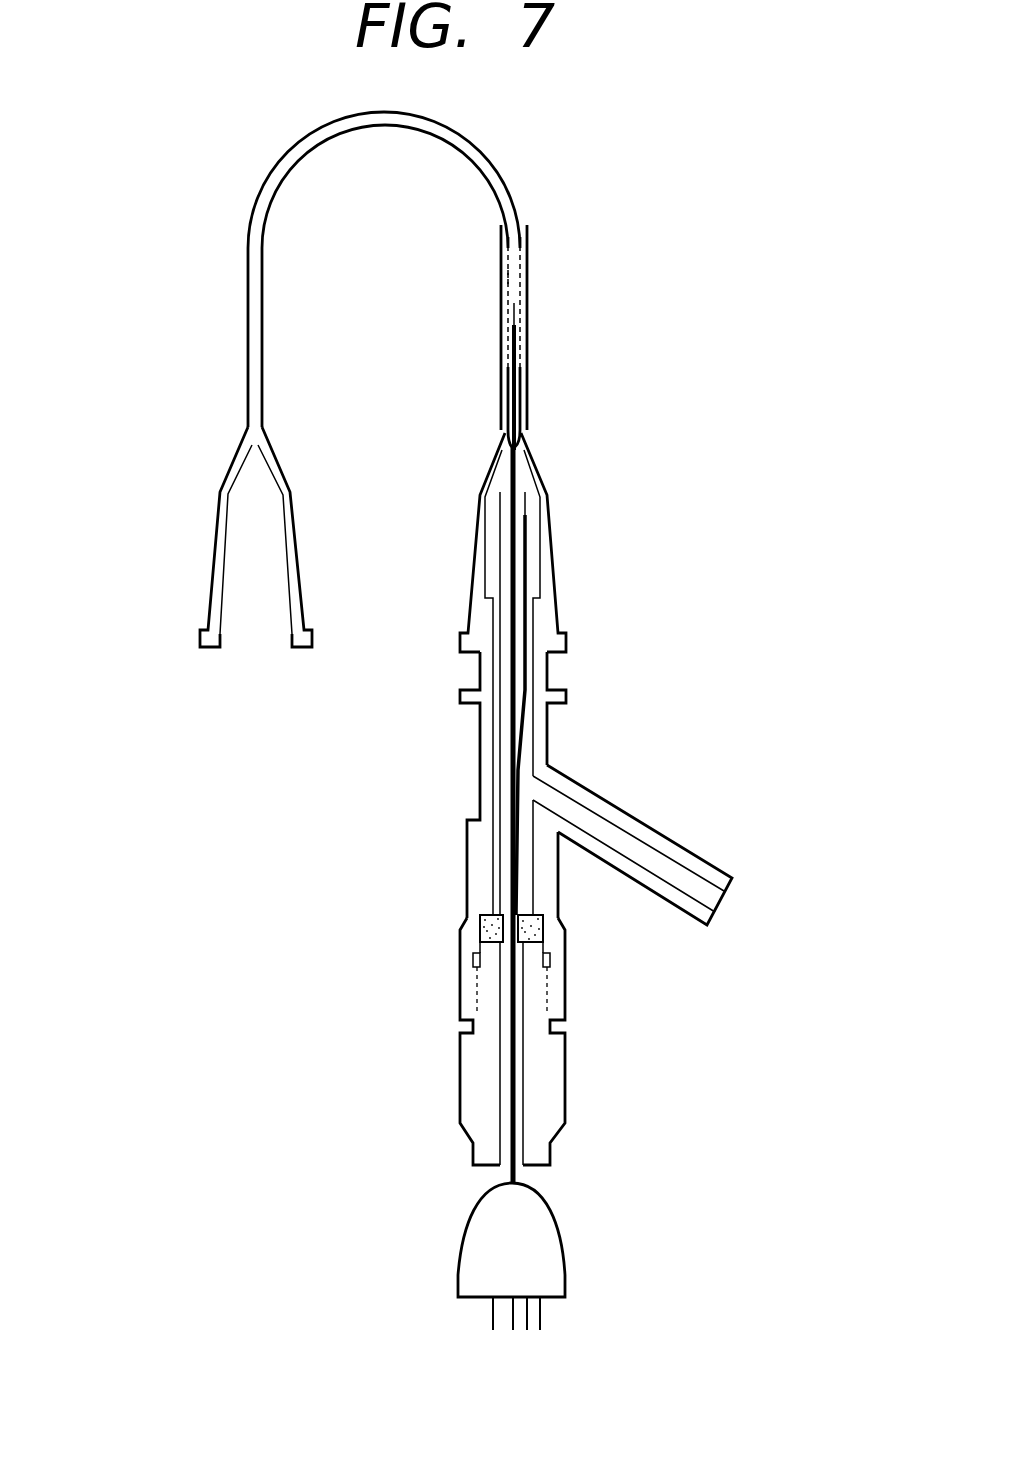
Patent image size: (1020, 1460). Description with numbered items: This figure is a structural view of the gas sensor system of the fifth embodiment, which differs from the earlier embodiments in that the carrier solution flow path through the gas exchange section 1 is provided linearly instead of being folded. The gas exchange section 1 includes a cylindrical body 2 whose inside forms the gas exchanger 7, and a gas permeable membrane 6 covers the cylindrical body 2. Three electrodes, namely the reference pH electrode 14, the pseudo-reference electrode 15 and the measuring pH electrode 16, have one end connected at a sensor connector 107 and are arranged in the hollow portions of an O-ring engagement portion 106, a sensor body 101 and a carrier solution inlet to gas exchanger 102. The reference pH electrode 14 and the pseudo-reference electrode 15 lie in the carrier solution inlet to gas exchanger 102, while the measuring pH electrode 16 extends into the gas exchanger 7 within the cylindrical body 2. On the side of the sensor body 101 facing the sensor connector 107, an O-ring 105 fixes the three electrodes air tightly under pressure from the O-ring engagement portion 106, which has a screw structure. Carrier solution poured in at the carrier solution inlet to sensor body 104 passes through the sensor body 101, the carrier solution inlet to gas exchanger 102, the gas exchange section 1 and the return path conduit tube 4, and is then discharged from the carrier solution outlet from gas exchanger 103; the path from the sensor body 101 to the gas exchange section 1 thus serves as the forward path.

The gas exchange section 1 is at (548, 353).
The cylindrical body 2 is at (520, 273).
The conduit tube 4 is at (248, 337).
The gas permeable membrane 6 is at (528, 236).
The gas exchanger 7 is at (508, 277).
The reference pH electrode 14 is at (526, 508).
The pseudo-reference electrode 15 is at (498, 515).
The measuring pH electrode 16 is at (515, 311).
The sensor body 101 is at (548, 729).
The carrier solution inlet to gas exchanger 102 is at (554, 557).
The carrier solution outlet from gas exchanger 103 is at (210, 575).
The carrier solution inlet to sensor body 104 is at (718, 903).
The O-ring 105 is at (543, 930).
The O-ring engagement portion 106 is at (566, 1085).
The sensor connector 107 is at (566, 1257).